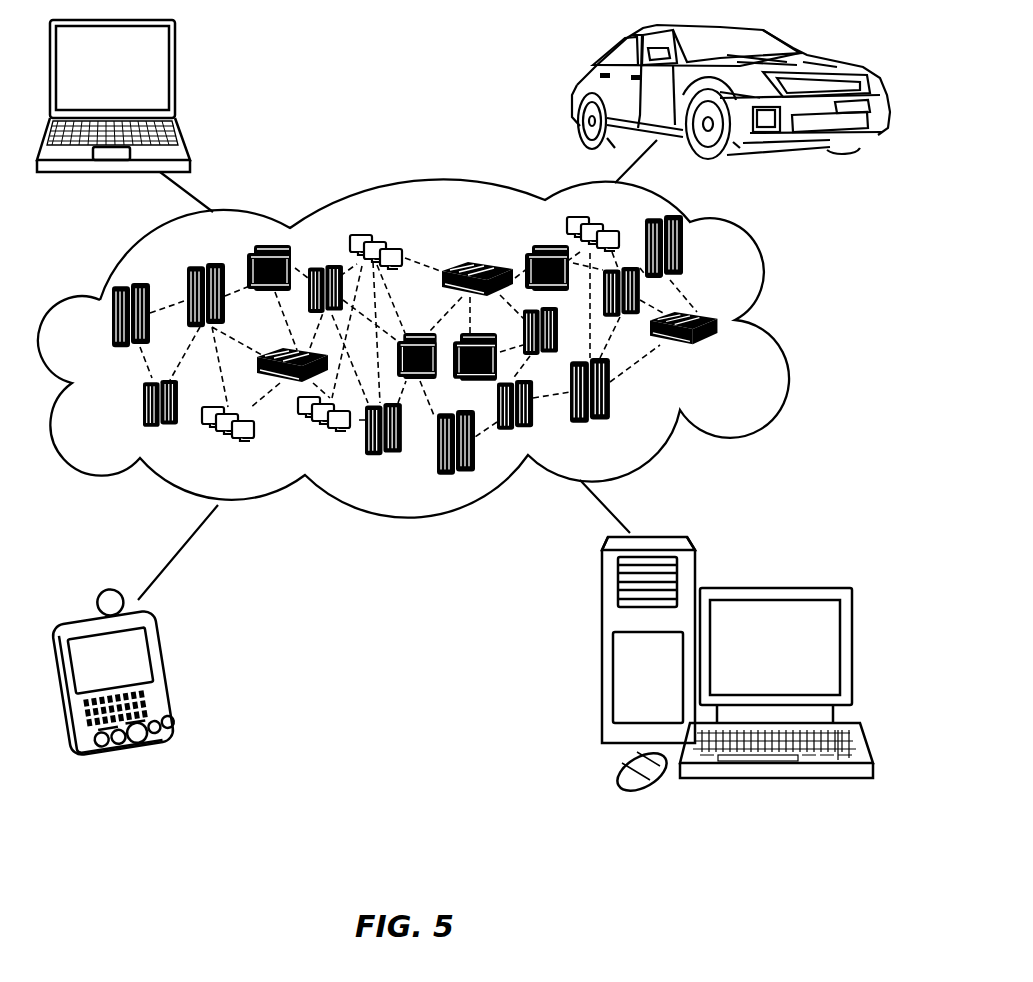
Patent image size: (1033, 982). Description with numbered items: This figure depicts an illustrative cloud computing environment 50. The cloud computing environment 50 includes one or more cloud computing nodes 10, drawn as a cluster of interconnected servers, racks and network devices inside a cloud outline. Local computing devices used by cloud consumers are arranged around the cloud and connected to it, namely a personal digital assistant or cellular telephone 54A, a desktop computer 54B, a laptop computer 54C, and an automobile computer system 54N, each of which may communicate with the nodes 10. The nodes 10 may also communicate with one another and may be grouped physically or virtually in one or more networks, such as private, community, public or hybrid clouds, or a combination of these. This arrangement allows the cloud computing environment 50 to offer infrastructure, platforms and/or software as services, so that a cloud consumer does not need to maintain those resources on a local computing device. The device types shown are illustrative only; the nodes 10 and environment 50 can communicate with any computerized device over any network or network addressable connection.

The cloud computing node 10 is at (734, 357).
The cloud computing environment 50 is at (778, 331).
The personal digital assistant or cellular telephone 54A is at (168, 674).
The desktop computer 54B is at (773, 588).
The laptop computer 54C is at (177, 75).
The automobile computer system 54N is at (572, 94).